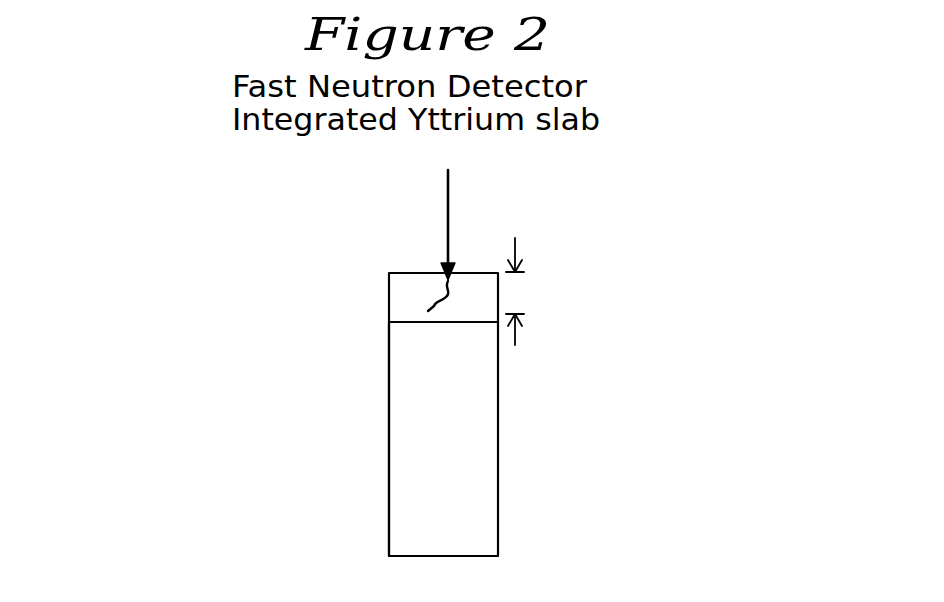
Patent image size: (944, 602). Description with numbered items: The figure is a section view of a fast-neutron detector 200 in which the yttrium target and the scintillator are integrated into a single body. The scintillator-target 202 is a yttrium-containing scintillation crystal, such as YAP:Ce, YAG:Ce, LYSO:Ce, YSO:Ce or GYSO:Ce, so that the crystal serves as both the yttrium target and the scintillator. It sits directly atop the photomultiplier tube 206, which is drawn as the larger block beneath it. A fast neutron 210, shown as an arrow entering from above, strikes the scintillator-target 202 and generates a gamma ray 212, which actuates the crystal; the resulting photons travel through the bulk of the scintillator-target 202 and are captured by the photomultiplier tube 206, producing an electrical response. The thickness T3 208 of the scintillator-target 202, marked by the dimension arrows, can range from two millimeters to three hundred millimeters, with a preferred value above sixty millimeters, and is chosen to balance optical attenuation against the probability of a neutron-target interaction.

The fast-neutron detector with integrated target and scintillator 200 is at (153, 163).
The scintillator-target 202 is at (389, 289).
The photomultiplier tube 206 is at (389, 440).
The scintillator-target thickness T3 208 is at (569, 291).
The neutron 210 is at (450, 231).
The gamma ray 212 is at (435, 287).